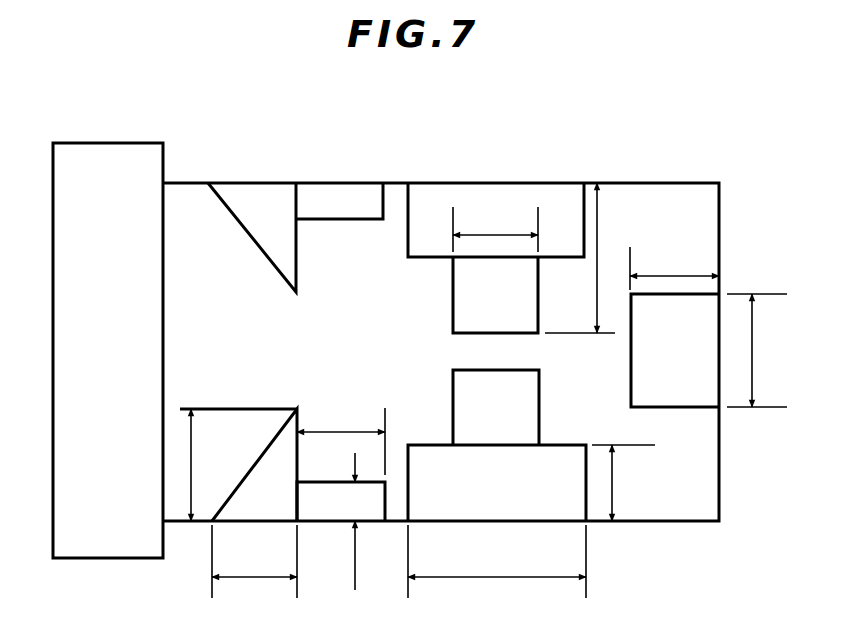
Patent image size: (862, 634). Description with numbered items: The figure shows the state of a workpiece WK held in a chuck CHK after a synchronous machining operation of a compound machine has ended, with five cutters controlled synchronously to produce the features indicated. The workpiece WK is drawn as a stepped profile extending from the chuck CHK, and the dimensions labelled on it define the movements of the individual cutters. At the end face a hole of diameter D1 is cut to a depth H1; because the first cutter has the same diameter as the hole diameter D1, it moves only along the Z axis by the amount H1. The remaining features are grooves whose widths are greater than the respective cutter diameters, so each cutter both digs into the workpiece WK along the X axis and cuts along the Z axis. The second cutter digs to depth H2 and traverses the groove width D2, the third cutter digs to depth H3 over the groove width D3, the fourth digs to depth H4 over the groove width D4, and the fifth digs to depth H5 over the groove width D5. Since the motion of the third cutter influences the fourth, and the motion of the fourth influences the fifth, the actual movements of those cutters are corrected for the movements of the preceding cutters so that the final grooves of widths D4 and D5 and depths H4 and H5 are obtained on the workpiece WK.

The chuck CHK is at (116, 147).
The workpiece WK is at (195, 190).
The hole diameter D1 is at (758, 350).
The groove width D2 is at (495, 229).
The groove width D3 is at (497, 561).
The groove width D4 is at (341, 439).
The groove width D5 is at (254, 561).
The hole depth H1 is at (674, 268).
The groove depth H2 is at (590, 258).
The groove depth H3 is at (623, 483).
The groove depth H4 is at (336, 521).
The groove depth H5 is at (210, 465).